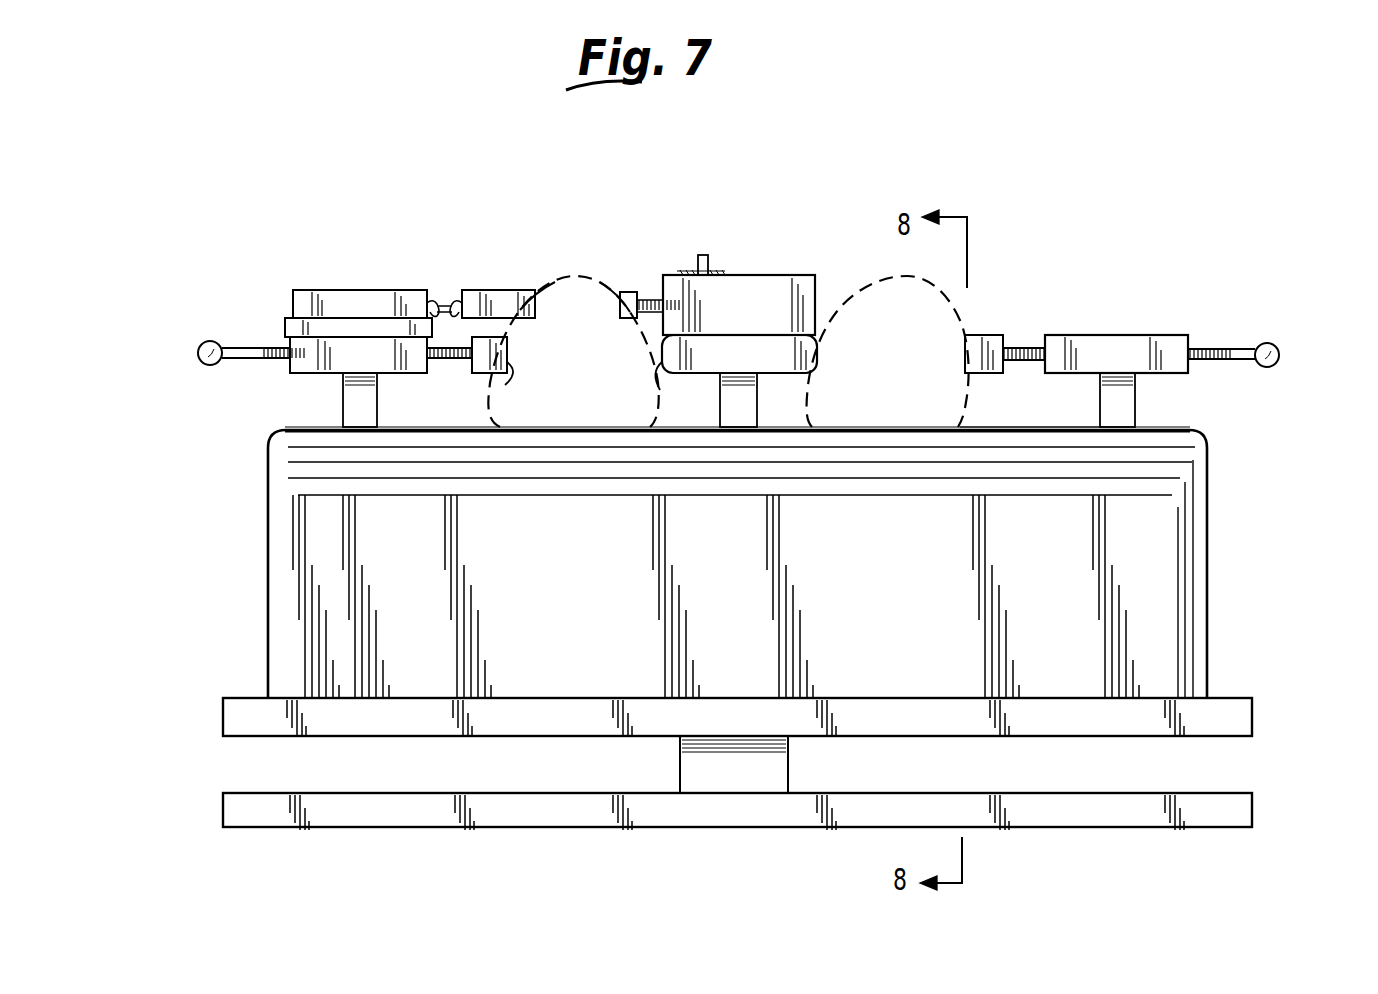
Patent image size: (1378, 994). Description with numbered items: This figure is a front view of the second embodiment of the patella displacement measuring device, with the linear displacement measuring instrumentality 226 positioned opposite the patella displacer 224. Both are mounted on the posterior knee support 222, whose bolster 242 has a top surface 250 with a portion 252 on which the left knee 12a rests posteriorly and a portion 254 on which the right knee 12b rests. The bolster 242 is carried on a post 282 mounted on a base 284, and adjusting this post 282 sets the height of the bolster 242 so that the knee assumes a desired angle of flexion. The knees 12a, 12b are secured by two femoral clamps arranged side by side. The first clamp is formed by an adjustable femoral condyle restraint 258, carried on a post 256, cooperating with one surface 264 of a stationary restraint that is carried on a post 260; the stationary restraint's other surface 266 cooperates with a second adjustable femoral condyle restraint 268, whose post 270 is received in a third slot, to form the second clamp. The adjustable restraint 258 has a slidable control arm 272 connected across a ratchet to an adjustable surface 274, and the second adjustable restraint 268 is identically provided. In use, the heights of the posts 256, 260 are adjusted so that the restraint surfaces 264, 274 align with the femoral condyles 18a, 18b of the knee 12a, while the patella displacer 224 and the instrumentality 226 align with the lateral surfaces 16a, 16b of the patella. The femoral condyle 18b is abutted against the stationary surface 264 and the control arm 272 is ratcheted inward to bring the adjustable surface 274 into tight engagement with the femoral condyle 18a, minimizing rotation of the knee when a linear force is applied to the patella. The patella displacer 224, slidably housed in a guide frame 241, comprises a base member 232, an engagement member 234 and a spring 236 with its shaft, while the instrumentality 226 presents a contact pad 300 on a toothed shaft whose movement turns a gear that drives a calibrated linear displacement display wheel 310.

The knee 12a is at (586, 282).
The knee 12b is at (897, 275).
The lateral surface of patella 16a is at (537, 292).
The lateral surface of patella 16b is at (620, 292).
The femoral condyle 18a is at (500, 378).
The femoral condyle 18b is at (662, 390).
The posterior knee support 222 is at (1185, 535).
The patella displacer 224 is at (323, 290).
The linear displacement measuring instrumentality 226 is at (794, 338).
The base member 232 is at (293, 300).
The engagement member 234 is at (473, 292).
The spring 236 is at (435, 298).
The guide frame 241 is at (285, 323).
The bolster 242 is at (300, 578).
The top surface 250 is at (1170, 430).
The portion 252 is at (492, 427).
The portion 254 is at (982, 427).
The post 256 is at (347, 405).
The adjustable femoral condyle restraint 258 is at (288, 367).
The post 260 is at (748, 410).
The surface 264 is at (652, 347).
The surface 266 is at (820, 343).
The second adjustable femoral condyle restraint 268 is at (1130, 335).
The post 270 is at (1120, 393).
The slidable control arm 272 is at (230, 348).
The adjustable surface 274 is at (523, 380).
The post 282 is at (772, 762).
The base 284 is at (1237, 808).
The contact pad 300 is at (630, 292).
The calibrated linear displacement display wheel 310 is at (708, 268).